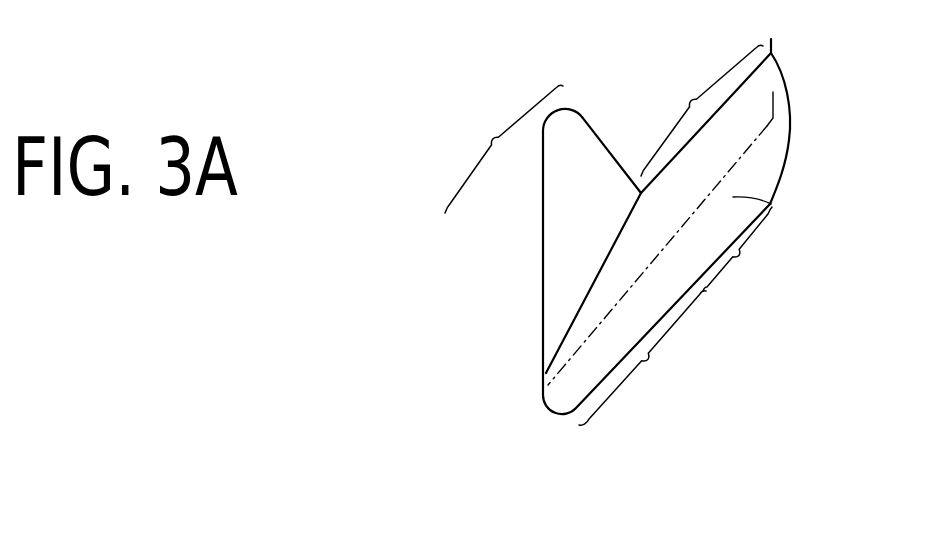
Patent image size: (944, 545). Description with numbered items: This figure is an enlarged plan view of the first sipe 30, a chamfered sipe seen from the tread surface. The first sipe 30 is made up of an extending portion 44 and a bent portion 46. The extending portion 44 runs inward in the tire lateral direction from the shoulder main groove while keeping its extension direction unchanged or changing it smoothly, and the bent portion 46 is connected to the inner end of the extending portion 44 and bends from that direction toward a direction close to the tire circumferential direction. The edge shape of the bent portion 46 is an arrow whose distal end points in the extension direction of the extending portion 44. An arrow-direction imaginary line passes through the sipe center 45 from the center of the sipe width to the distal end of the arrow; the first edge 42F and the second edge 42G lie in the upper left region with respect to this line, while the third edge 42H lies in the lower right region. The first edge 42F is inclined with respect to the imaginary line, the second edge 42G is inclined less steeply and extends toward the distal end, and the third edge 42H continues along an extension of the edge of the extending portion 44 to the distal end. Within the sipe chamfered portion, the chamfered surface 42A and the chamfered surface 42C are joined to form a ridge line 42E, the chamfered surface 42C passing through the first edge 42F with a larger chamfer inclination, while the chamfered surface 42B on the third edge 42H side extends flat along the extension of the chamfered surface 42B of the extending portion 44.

The first sipe 30 is at (811, 187).
The chamfered surface 42A is at (579, 327).
The chamfered surface 42B is at (772, 206).
The chamfered surface 42C is at (573, 170).
The ridge line 42E is at (586, 294).
The first edge 42F is at (605, 146).
The second edge 42G is at (542, 156).
The third edge 42H is at (600, 392).
The extending portion 44 is at (706, 168).
The sipe center 45 is at (772, 95).
The bent portion 46 is at (575, 255).